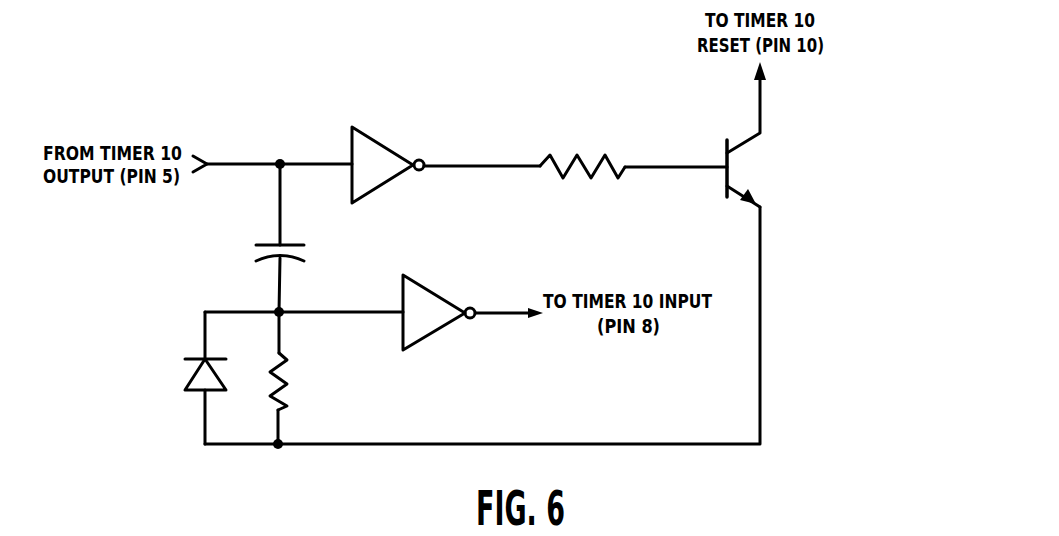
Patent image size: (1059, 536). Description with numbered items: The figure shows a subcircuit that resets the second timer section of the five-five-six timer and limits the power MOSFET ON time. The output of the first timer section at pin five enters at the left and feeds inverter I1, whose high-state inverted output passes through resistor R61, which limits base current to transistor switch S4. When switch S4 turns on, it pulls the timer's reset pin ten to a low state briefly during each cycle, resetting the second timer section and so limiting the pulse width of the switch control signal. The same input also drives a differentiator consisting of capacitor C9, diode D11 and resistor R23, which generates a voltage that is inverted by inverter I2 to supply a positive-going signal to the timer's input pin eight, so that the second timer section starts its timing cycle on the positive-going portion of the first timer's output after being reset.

The capacitor C9 is at (273, 243).
The inverter I1 is at (385, 147).
The resistor R61 is at (577, 155).
The transistor switch S4 is at (723, 152).
The inverter I2 is at (437, 290).
The diode D11 is at (190, 372).
The resistor R23 is at (286, 378).